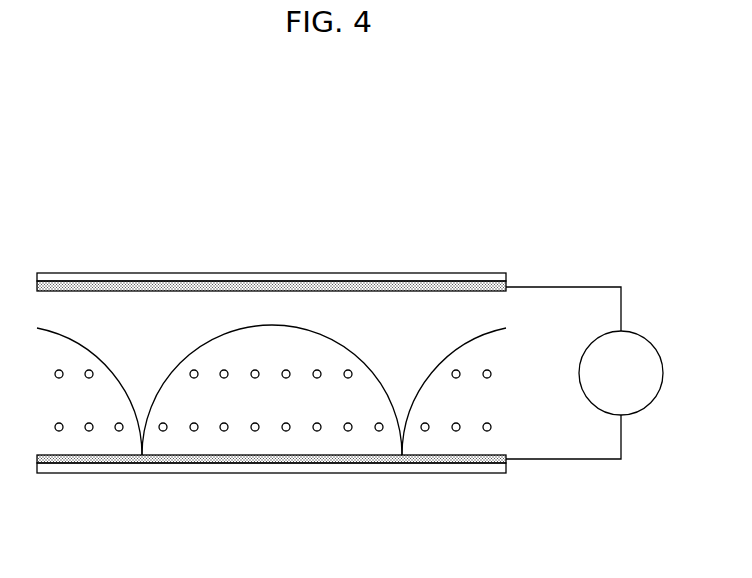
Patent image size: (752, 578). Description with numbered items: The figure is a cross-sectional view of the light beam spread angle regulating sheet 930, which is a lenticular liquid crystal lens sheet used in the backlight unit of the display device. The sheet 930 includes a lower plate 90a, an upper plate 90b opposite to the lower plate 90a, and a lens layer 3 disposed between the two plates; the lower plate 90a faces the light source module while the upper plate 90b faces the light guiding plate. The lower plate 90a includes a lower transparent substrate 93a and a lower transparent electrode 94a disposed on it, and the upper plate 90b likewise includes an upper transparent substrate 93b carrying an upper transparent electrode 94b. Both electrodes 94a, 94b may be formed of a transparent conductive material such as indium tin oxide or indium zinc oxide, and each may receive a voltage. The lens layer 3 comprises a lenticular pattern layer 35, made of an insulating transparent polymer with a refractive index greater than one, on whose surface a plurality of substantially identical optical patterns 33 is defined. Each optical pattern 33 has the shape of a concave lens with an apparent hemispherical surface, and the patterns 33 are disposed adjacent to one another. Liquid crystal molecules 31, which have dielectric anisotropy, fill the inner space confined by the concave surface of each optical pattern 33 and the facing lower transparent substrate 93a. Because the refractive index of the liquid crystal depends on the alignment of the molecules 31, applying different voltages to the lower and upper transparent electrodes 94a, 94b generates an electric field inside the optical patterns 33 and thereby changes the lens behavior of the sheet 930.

The lens layer 3 is at (255, 376).
The liquid crystal molecules 31 is at (88, 432).
The optical patterns 33 is at (266, 325).
The lenticular pattern layer 35 is at (108, 307).
The lower plate 90a is at (271, 508).
The upper plate 90b is at (271, 240).
The lower transparent substrate 93a is at (477, 522).
The upper transparent substrate 93b is at (393, 274).
The lower transparent electrode 94a is at (449, 463).
The upper transparent electrode 94b is at (449, 289).
The light beam spread angle regulating sheet 930 is at (334, 355).